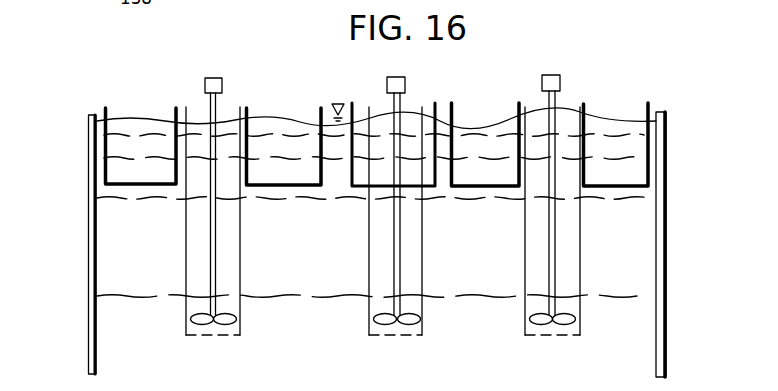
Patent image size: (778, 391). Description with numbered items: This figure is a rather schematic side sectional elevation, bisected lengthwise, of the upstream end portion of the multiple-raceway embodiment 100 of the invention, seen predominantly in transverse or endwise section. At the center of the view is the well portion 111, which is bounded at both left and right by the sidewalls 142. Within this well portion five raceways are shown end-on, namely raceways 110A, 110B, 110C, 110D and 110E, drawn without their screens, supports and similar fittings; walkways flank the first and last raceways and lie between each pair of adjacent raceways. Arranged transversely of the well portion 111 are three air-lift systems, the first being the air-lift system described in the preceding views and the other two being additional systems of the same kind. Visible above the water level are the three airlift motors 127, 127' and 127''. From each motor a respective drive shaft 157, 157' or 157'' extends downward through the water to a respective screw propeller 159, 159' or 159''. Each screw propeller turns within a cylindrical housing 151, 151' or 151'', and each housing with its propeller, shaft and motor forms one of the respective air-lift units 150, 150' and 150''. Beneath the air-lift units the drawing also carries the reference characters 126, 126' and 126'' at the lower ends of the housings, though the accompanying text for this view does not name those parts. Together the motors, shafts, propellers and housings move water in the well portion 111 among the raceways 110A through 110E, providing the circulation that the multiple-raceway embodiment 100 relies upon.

The multiple-raceway embodiment 100 is at (612, 88).
The well portion 111 is at (666, 214).
The sidewalls 142 is at (88, 250).
The raceway 110A is at (140, 187).
The raceway 110B is at (285, 188).
The raceway 110C is at (433, 190).
The raceway 110D is at (483, 186).
The raceway 110E is at (655, 210).
The airlift motor 127 is at (240, 73).
The airlift motor 127' is at (421, 71).
The airlift motor 127'' is at (525, 72).
The air-lift unit 150 is at (205, 242).
The air-lift unit 150' is at (385, 235).
The air-lift unit 150'' is at (552, 234).
The cylindrical housing 151 is at (182, 221).
The cylindrical housing 151' is at (365, 221).
The cylindrical housing 151'' is at (528, 221).
The drive shaft 157 is at (251, 204).
The drive shaft 157' is at (433, 204).
The drive shaft 157'' is at (594, 203).
The screw propeller 159 is at (242, 321).
The screw propeller 159' is at (426, 321).
The screw propeller 159'' is at (589, 320).
The screen / perforated bottom 126 is at (213, 363).
The screen / perforated bottom 126' is at (395, 356).
The screen / perforated bottom 126'' is at (551, 356).